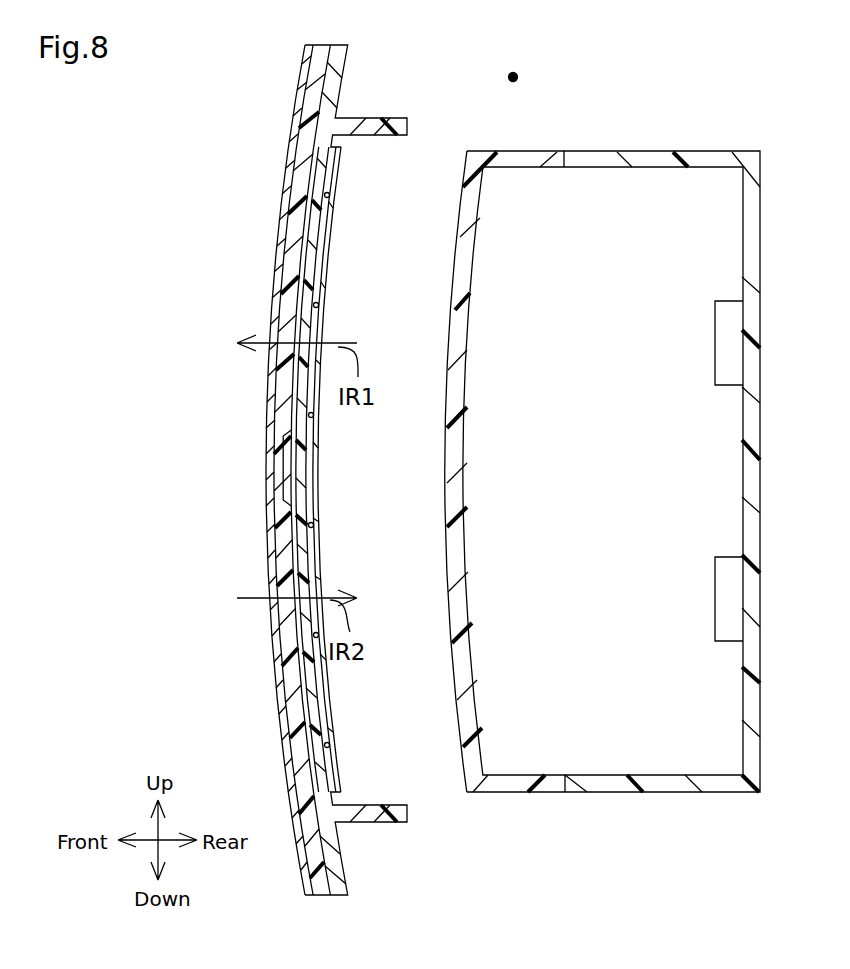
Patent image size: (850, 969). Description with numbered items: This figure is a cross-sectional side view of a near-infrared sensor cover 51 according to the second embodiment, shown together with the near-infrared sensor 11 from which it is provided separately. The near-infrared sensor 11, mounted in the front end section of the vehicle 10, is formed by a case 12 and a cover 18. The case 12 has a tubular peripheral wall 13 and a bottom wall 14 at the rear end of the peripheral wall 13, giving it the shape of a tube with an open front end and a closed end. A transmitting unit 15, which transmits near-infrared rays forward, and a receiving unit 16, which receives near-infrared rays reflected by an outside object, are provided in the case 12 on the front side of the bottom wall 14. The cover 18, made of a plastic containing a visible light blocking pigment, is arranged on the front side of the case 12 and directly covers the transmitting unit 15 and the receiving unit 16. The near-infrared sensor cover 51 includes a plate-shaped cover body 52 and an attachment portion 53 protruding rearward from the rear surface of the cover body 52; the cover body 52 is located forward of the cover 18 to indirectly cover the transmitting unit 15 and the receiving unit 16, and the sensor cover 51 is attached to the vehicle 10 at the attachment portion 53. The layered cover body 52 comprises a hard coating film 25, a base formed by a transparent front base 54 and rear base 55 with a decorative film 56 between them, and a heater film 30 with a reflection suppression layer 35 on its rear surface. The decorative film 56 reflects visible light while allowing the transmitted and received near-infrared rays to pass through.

The vehicle 10 is at (516, 75).
The near-infrared sensor 11 is at (617, 475).
The case 12 is at (731, 398).
The peripheral wall 13 is at (703, 158).
The bottom wall 14 is at (753, 200).
The transmitting unit 15 is at (725, 338).
The receiving unit 16 is at (725, 593).
The cover 18 is at (518, 158).
The hard coating film 25 is at (280, 277).
The heater film 30 is at (330, 220).
The reflection suppression layer 35 is at (320, 277).
The near-infrared sensor cover 51 is at (292, 463).
The cover body 52 is at (272, 88).
The attachment portion 53 is at (387, 122).
The front base 54 is at (312, 95).
The rear base 55 is at (315, 202).
The decorative film 56 is at (300, 178).